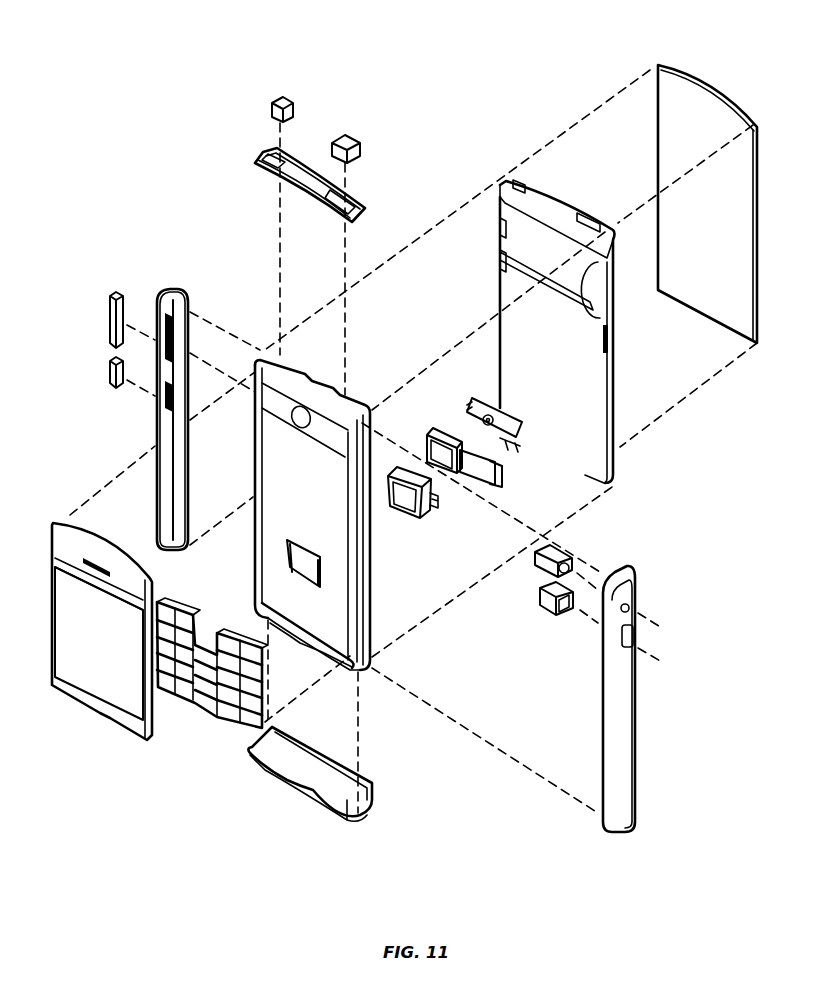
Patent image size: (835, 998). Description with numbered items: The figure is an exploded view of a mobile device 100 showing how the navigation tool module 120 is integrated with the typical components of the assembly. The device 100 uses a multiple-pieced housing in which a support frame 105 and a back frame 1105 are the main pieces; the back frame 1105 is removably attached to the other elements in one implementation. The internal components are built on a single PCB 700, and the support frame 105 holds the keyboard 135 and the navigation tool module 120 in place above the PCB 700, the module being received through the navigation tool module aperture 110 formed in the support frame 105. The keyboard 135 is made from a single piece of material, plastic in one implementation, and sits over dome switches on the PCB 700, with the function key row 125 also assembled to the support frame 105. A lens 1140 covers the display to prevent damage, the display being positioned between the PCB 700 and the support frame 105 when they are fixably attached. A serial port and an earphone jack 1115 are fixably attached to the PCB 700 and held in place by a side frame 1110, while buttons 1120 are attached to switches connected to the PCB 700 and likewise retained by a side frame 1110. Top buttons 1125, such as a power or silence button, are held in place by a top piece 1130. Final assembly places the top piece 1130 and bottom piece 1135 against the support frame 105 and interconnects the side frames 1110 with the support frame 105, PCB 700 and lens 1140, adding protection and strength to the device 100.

The mobile device 100 is at (226, 38).
The support frame 105 is at (312, 390).
The navigation tool module aperture 110 is at (288, 568).
The navigation tool module 120 is at (547, 428).
The function key row 125 is at (140, 610).
The keyboard 135 is at (200, 710).
The PCB 700 is at (590, 447).
The back frame 1105 is at (710, 85).
The side frame 1110 is at (157, 440).
The earphone jack 1115 is at (547, 605).
The buttons 1120 is at (110, 372).
The top buttons 1125 is at (352, 137).
The top piece 1130 is at (363, 200).
The bottom piece 1135 is at (290, 790).
The lens 1140 is at (68, 540).